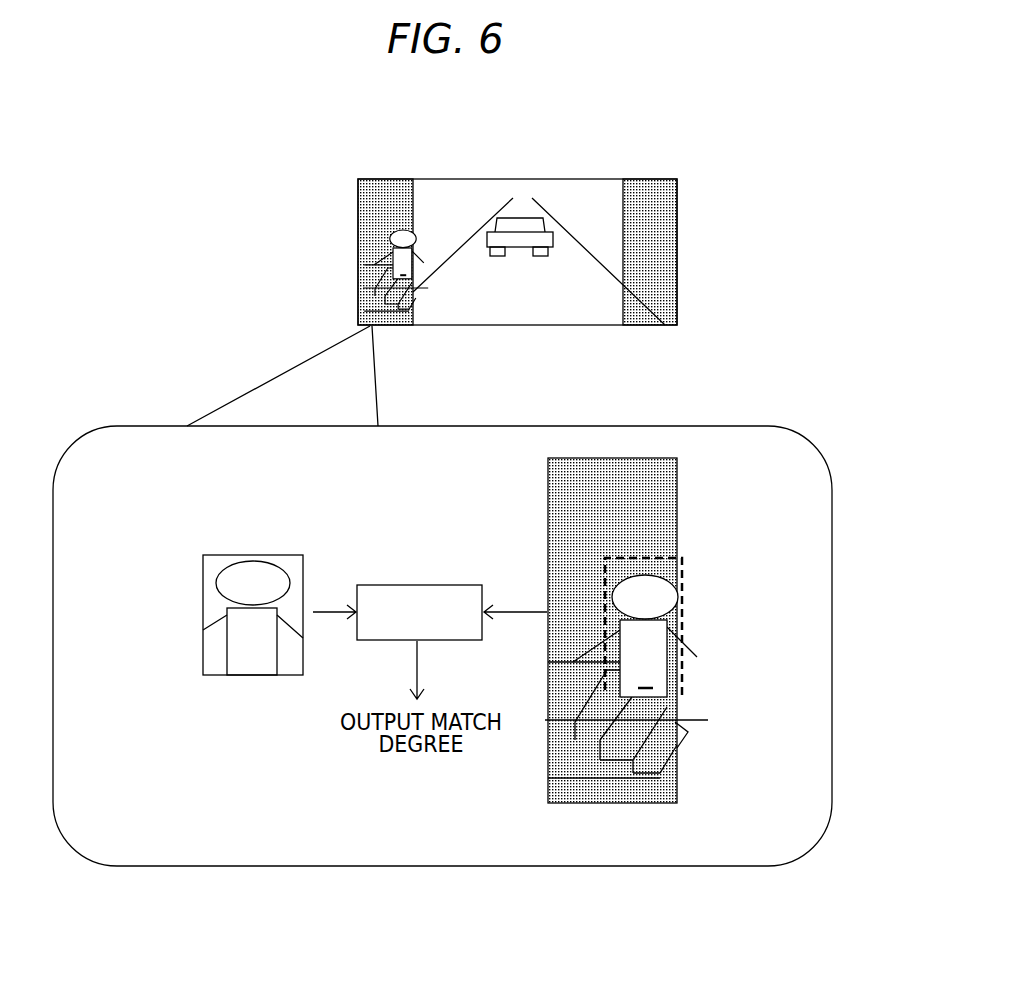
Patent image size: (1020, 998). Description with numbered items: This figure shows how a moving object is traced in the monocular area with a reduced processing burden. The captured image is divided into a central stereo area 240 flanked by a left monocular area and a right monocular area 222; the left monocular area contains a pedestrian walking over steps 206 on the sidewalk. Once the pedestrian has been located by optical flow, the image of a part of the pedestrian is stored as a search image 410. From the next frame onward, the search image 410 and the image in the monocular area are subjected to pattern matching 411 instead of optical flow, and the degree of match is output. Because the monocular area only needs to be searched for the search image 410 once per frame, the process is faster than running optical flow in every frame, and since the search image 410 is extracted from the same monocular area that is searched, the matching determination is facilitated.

The steps on the sidewalk 206 is at (610, 743).
The right monocular area 222 is at (677, 326).
The stereo area 240 is at (508, 326).
The search image 410 is at (211, 644).
The pattern matching unit 411 is at (393, 584).